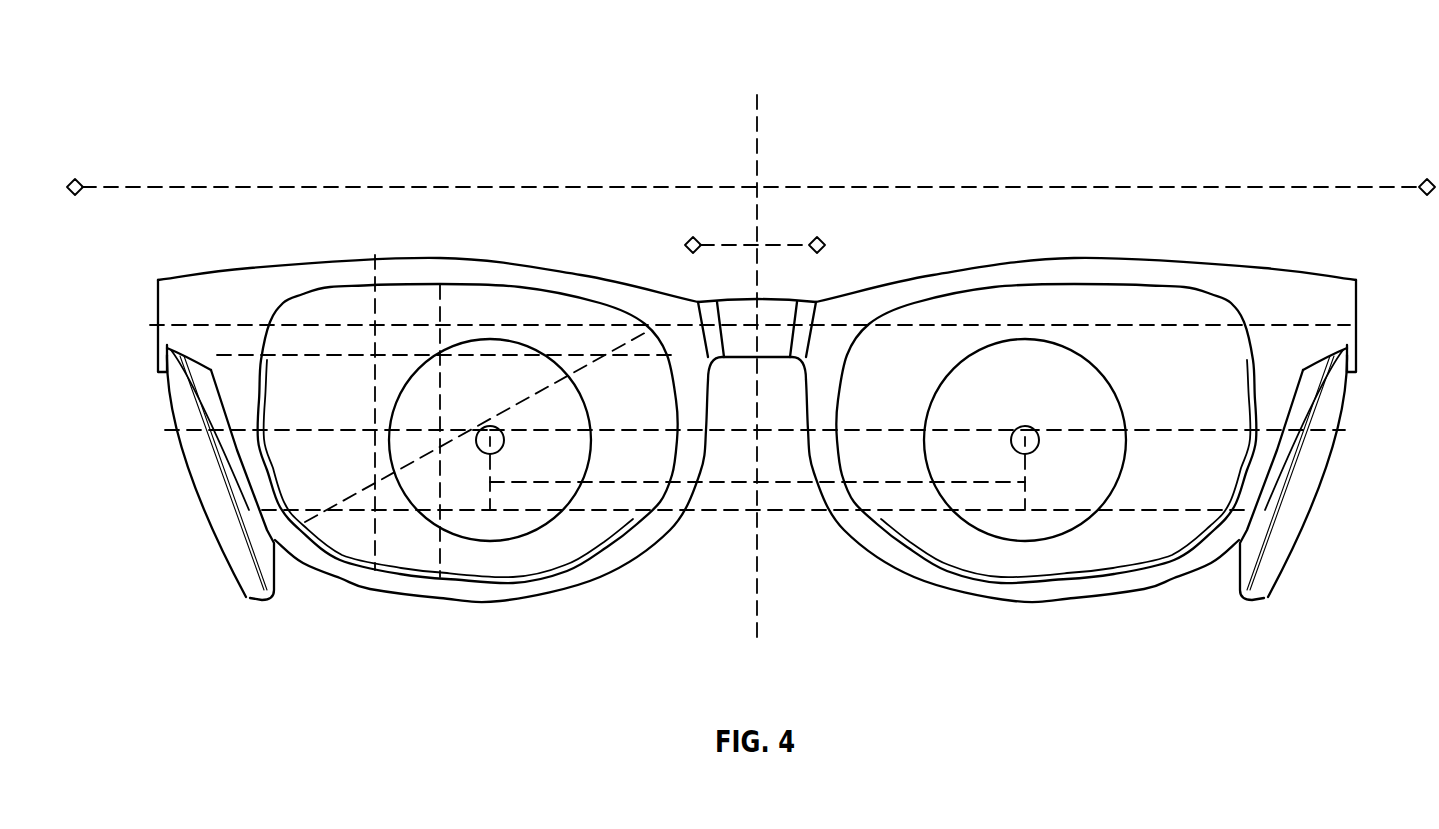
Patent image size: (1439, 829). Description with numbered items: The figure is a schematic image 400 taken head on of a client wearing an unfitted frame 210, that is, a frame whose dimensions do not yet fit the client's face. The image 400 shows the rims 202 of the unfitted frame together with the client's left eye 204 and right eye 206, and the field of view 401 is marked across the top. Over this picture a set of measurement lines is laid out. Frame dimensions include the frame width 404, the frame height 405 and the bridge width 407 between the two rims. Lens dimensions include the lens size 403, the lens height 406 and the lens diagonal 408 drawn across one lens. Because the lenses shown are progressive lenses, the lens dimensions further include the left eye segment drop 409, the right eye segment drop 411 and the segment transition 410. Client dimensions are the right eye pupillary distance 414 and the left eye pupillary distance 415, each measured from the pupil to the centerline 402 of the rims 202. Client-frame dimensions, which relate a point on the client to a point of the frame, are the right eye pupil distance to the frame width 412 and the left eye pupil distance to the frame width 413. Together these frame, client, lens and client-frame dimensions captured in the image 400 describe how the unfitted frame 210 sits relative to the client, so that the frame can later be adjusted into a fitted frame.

The image 400 is at (1283, 107).
The rims 202 is at (1313, 288).
The frame 210 is at (163, 278).
The left eye 204 is at (1030, 540).
The right eye 206 is at (485, 540).
The field of view 401 is at (1195, 188).
The centerline 402 is at (758, 165).
The lens size 403 is at (238, 353).
The frame width 404 is at (1135, 325).
The frame height 405 is at (373, 318).
The lens height 406 is at (440, 555).
The bridge width 407 is at (765, 243).
The lens diagonal 408 is at (367, 488).
The left eye segment drop 409 is at (1025, 454).
The segment transition 410 is at (798, 518).
The right eye segment drop 411 is at (490, 454).
The right eye pupil distance to the frame width 412 is at (313, 428).
The left eye pupil distance to the frame width 413 is at (1183, 427).
The right eye pupillary distance 414 is at (633, 428).
The left eye pupillary distance 415 is at (877, 427).